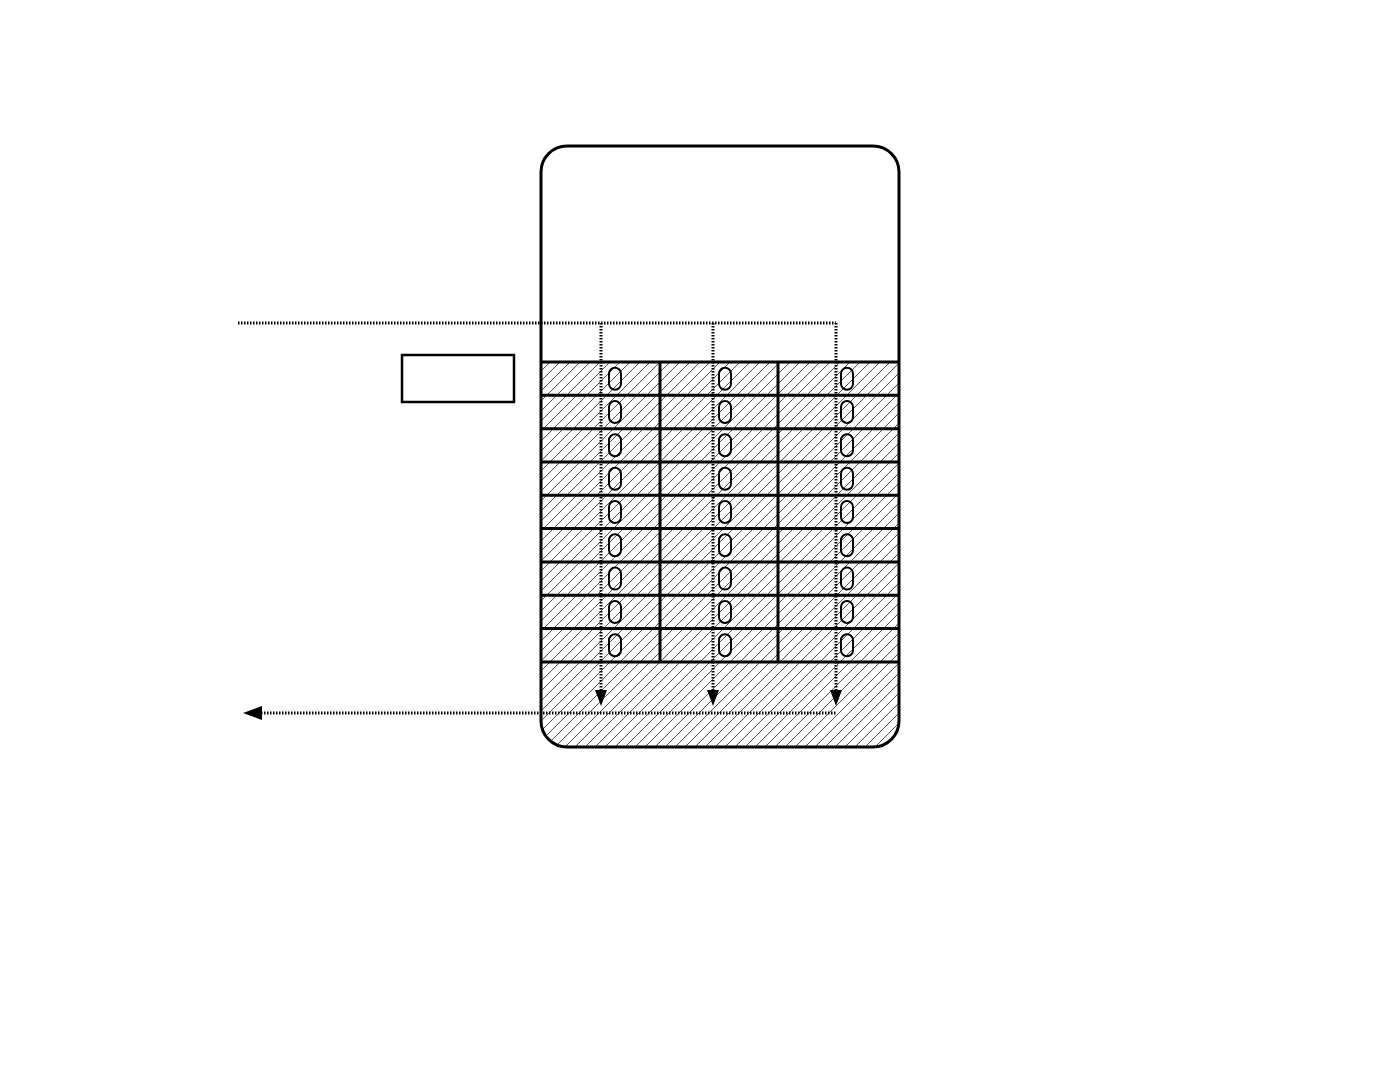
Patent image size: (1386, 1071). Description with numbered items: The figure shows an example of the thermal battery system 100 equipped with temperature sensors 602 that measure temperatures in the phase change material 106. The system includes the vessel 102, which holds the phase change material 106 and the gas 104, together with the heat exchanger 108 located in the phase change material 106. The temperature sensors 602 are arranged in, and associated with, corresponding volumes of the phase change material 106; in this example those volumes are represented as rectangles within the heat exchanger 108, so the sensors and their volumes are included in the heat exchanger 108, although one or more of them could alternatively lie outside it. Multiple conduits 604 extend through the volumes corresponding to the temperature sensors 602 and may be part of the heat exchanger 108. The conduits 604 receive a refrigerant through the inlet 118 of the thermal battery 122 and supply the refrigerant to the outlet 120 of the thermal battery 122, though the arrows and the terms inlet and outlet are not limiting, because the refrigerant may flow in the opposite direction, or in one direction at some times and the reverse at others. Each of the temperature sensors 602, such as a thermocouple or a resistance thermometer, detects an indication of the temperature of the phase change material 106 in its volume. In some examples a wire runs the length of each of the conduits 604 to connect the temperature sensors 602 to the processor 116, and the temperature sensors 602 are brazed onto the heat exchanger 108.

The thermal battery system 100 is at (1000, 720).
The vessel 102 is at (890, 146).
The gas 104 is at (872, 231).
The phase change material 106 is at (868, 385).
The heat exchanger 108 is at (868, 660).
The processor 116 is at (541, 440).
The inlet 118 is at (328, 318).
The outlet 120 is at (308, 703).
The thermal battery 122 is at (899, 300).
The temperature sensors 602 is at (850, 546).
The conduits 604 is at (603, 352).